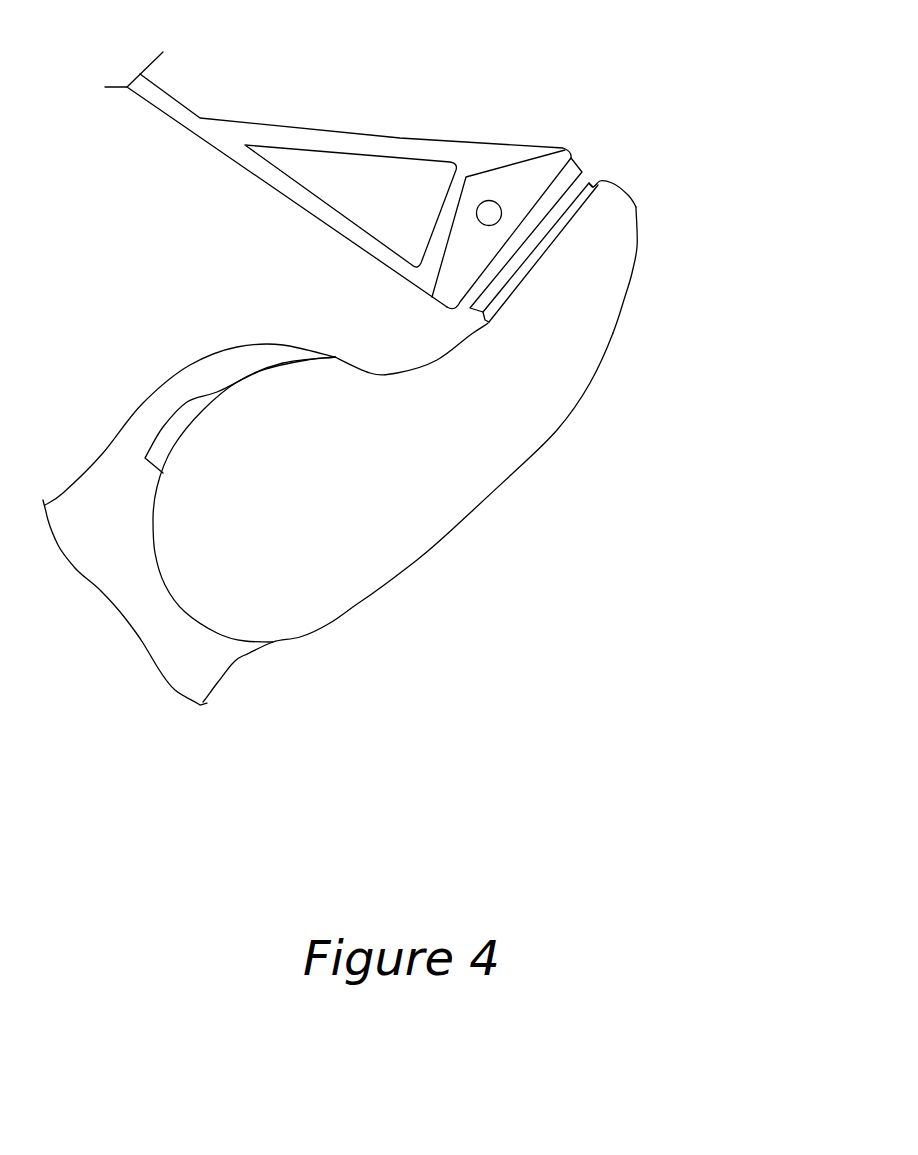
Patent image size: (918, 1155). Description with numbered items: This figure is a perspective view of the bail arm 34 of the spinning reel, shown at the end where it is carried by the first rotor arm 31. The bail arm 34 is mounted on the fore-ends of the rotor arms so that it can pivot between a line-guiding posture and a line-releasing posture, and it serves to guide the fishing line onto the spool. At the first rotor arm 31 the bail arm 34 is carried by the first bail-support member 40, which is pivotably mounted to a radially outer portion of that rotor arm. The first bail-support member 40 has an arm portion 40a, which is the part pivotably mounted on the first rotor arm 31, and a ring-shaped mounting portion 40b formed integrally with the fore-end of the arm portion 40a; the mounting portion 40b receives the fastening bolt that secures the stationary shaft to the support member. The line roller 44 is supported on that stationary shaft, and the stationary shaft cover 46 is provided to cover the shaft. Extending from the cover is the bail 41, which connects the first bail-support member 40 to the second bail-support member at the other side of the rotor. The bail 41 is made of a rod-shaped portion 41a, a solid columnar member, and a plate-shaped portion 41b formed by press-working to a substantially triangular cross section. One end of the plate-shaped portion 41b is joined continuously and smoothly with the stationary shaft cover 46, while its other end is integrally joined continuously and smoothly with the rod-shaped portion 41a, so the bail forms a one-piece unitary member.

The first rotor arm 31 is at (218, 657).
The bail arm 34 is at (648, 230).
The first bail-support member 40 is at (487, 515).
The arm portion 40a is at (533, 423).
The mounting portion 40b is at (613, 190).
The bail 41 is at (280, 180).
The rod-shaped portion 41a is at (285, 193).
The plate-shaped portion 41b is at (437, 195).
The line roller 44 is at (590, 175).
The stationary shaft cover 46 is at (577, 167).